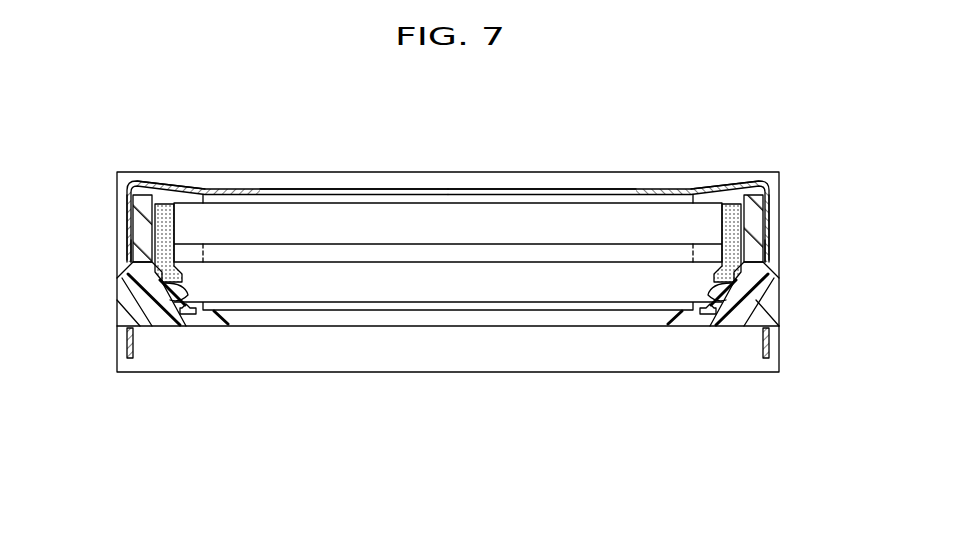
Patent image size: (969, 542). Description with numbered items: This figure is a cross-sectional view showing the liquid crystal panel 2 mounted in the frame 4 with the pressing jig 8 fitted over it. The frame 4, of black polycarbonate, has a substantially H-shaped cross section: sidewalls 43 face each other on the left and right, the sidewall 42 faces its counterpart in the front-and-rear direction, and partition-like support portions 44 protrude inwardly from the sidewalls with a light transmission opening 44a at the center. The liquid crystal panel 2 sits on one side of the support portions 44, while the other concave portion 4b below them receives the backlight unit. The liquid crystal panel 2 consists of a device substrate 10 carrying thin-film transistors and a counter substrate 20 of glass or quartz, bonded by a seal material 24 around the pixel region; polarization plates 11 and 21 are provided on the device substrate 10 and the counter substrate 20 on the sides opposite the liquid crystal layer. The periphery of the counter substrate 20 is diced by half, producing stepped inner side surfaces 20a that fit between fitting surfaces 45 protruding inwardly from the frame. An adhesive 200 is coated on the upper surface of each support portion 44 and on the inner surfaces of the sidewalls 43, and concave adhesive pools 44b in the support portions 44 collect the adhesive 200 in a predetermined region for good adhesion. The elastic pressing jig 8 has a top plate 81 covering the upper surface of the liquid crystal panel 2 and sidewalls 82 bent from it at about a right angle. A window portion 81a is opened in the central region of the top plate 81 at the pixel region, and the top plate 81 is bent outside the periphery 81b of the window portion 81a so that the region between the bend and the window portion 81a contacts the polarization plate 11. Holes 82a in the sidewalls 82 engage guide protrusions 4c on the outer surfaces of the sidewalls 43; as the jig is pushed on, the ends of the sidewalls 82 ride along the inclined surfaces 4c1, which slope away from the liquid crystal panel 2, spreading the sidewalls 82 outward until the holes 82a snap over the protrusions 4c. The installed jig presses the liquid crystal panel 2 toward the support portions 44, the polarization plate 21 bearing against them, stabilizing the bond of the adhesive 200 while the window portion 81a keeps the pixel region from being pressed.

The liquid crystal panel 2 is at (432, 180).
The frame 4 is at (262, 168).
The concave portion 4b is at (535, 358).
The guide protrusion 4c is at (130, 315).
The inclined surface 4c1 is at (125, 285).
The pressing jig 8 is at (115, 175).
The device substrate 10 is at (532, 215).
The polarization plate 11 is at (465, 204).
The counter substrate 20 is at (563, 305).
The inner side surface 20a is at (176, 290).
The polarization plate 21 is at (492, 308).
The seal material 24 is at (345, 250).
The sidewall 42 is at (602, 182).
The sidewall 43 is at (140, 222).
The support portion 44 is at (228, 318).
The light transmission opening 44a is at (406, 326).
The adhesive pool 44b is at (215, 316).
The fitting surface 45 is at (172, 320).
The top plate 81 is at (161, 190).
The window portion 81a is at (282, 188).
The periphery 81b is at (220, 190).
The sidewall 82 is at (127, 200).
The hole 82a is at (127, 250).
The adhesive 200 is at (170, 214).